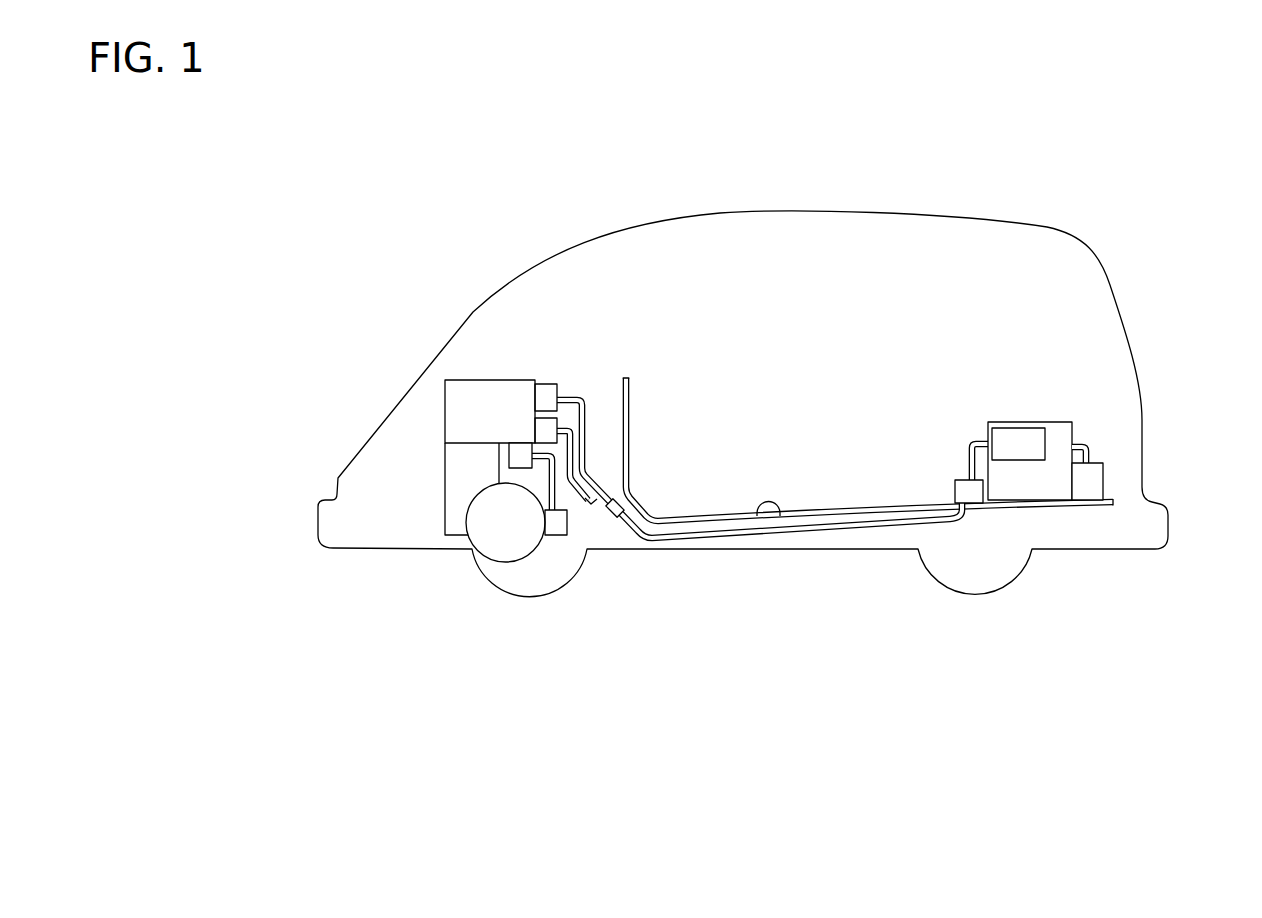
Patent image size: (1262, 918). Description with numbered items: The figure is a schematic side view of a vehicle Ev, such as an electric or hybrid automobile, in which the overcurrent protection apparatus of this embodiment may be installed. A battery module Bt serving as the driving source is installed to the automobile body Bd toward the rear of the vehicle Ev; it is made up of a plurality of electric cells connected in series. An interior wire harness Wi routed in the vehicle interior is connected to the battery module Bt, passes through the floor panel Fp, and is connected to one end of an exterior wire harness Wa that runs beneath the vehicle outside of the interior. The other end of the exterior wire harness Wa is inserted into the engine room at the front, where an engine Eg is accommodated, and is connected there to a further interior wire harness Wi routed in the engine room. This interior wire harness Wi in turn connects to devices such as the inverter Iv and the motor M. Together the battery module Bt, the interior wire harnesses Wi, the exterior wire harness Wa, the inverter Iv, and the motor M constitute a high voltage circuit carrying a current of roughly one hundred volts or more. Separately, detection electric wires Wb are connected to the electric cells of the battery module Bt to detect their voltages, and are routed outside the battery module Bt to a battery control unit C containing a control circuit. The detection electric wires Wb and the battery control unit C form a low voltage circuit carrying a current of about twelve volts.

The vehicle Ev is at (465, 245).
The automobile body Bd is at (810, 210).
The inverter Iv is at (465, 393).
The interior wire harness Wi is at (580, 427).
The exterior wire harness Wa is at (838, 533).
The engine Eg is at (453, 502).
The motor M is at (507, 545).
The floor panel Fp is at (757, 516).
The battery module Bt is at (1058, 440).
The detection electric wires Wb is at (1090, 447).
The battery control unit C is at (1087, 485).